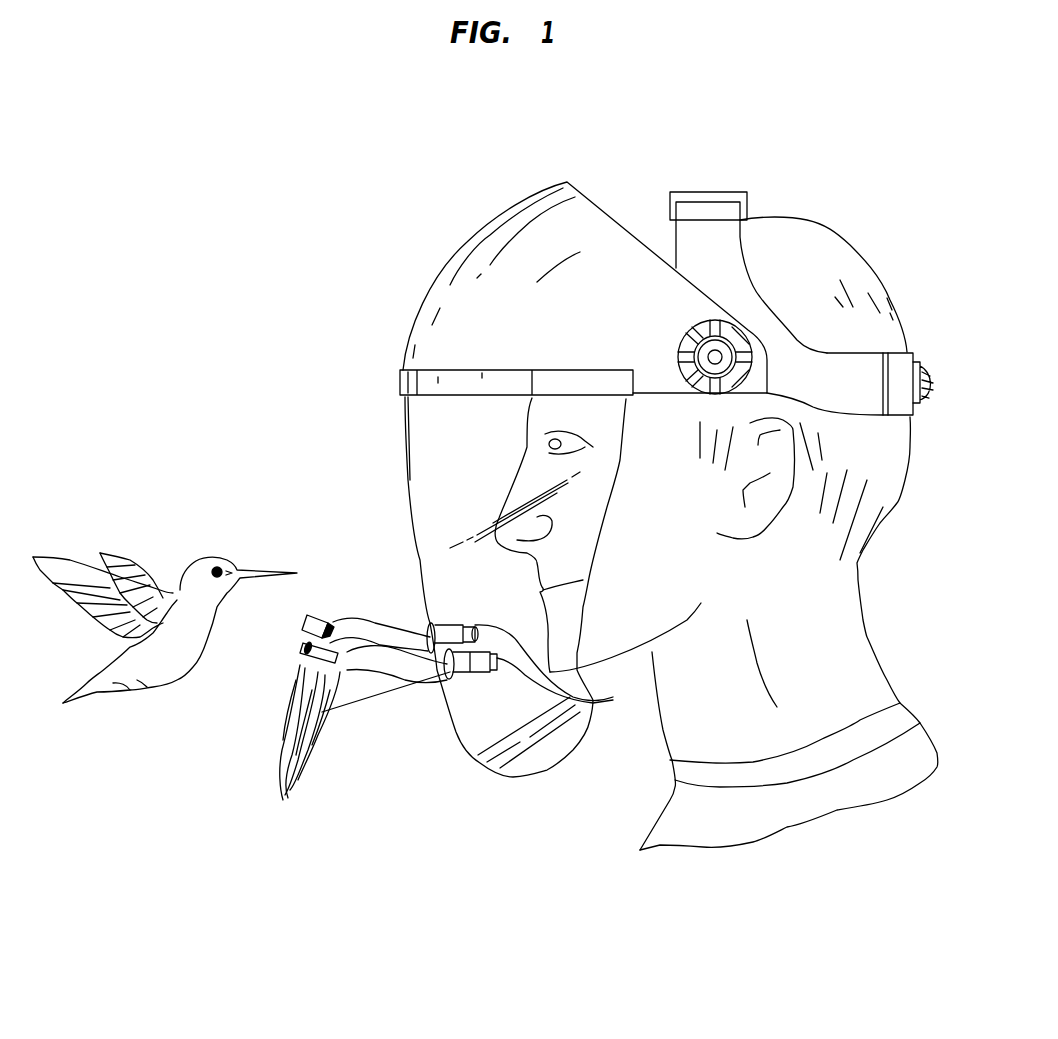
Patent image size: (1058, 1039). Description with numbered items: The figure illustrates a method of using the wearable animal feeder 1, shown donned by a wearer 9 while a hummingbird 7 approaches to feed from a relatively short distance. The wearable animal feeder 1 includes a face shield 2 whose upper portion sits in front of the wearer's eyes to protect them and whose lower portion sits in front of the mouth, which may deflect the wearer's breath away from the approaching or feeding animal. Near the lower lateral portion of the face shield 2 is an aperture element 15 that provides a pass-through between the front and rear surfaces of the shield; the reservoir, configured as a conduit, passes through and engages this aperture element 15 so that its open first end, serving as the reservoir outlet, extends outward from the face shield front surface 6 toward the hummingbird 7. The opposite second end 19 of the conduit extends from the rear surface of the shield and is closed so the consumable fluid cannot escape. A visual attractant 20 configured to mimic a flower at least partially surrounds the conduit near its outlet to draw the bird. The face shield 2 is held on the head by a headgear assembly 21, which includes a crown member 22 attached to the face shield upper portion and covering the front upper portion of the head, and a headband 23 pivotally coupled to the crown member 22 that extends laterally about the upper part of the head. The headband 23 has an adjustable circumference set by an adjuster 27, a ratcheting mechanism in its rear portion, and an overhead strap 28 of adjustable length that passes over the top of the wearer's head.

The wearable animal feeder 1 is at (385, 378).
The face shield 2 is at (467, 587).
The face shield front surface 6 is at (405, 485).
The hummingbird 7 is at (140, 682).
The wearer 9 is at (888, 630).
The aperture element 15 is at (445, 637).
The second end 19 is at (557, 667).
The visual attractant 20 is at (393, 624).
The headgear assembly 21 is at (639, 178).
The crown member 22 is at (448, 295).
The headband 23 is at (805, 373).
The adjuster 27 is at (935, 405).
The overhead strap 28 is at (740, 237).